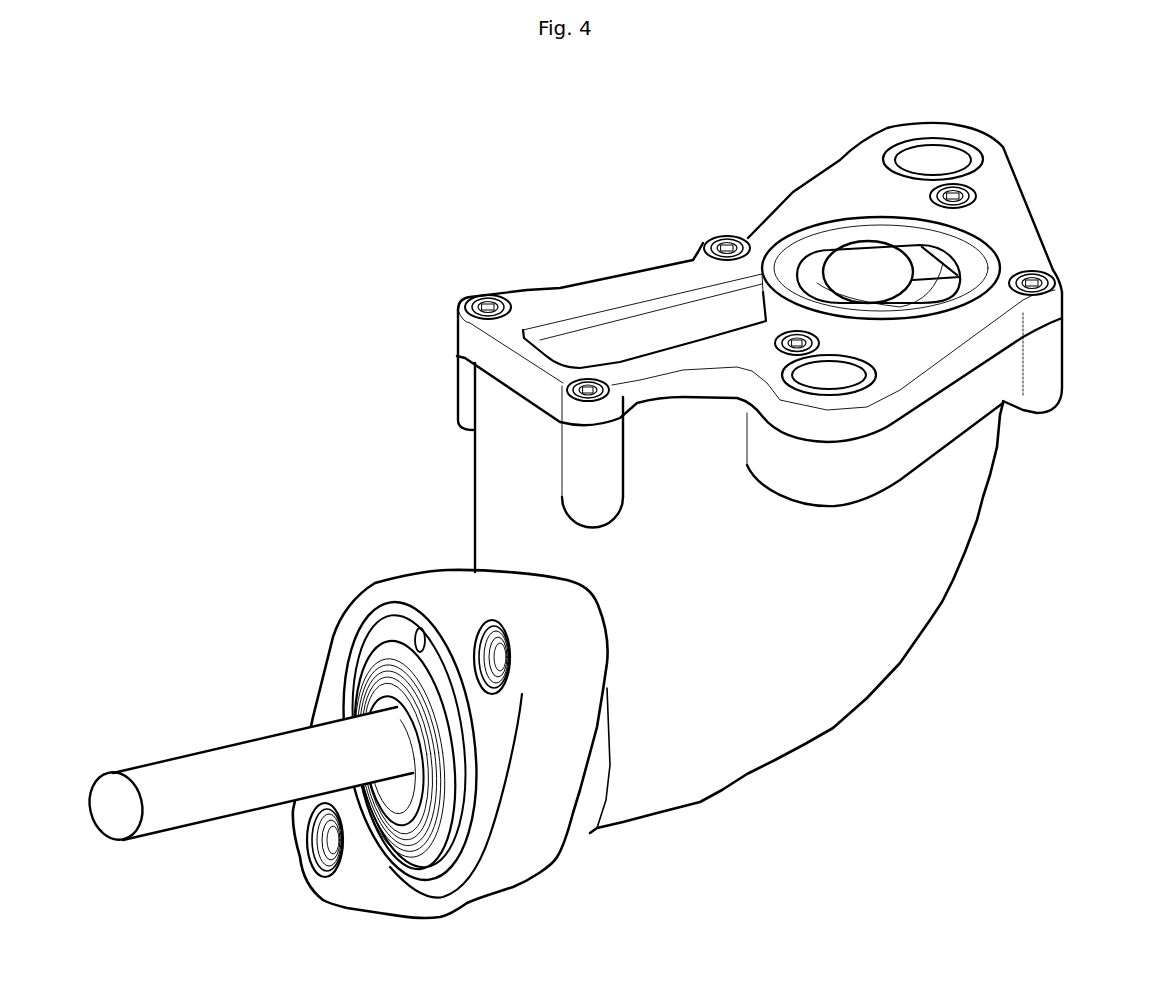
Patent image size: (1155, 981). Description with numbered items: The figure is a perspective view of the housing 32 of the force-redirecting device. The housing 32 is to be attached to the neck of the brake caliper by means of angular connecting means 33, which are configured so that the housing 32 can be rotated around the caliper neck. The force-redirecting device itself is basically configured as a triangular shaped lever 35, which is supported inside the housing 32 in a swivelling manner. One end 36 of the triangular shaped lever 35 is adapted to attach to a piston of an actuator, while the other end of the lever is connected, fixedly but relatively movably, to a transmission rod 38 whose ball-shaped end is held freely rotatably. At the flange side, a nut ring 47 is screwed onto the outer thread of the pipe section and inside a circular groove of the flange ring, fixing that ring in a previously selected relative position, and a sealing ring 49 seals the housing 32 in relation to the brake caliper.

The housing 32 is at (780, 708).
The angular connecting means 33 is at (362, 524).
The triangular shaped lever 35 is at (930, 280).
The one end of the triangular shaped lever 36 is at (857, 275).
The transmission rod 38 is at (162, 803).
The nut ring 47 is at (415, 638).
The sealing ring 49 is at (365, 669).